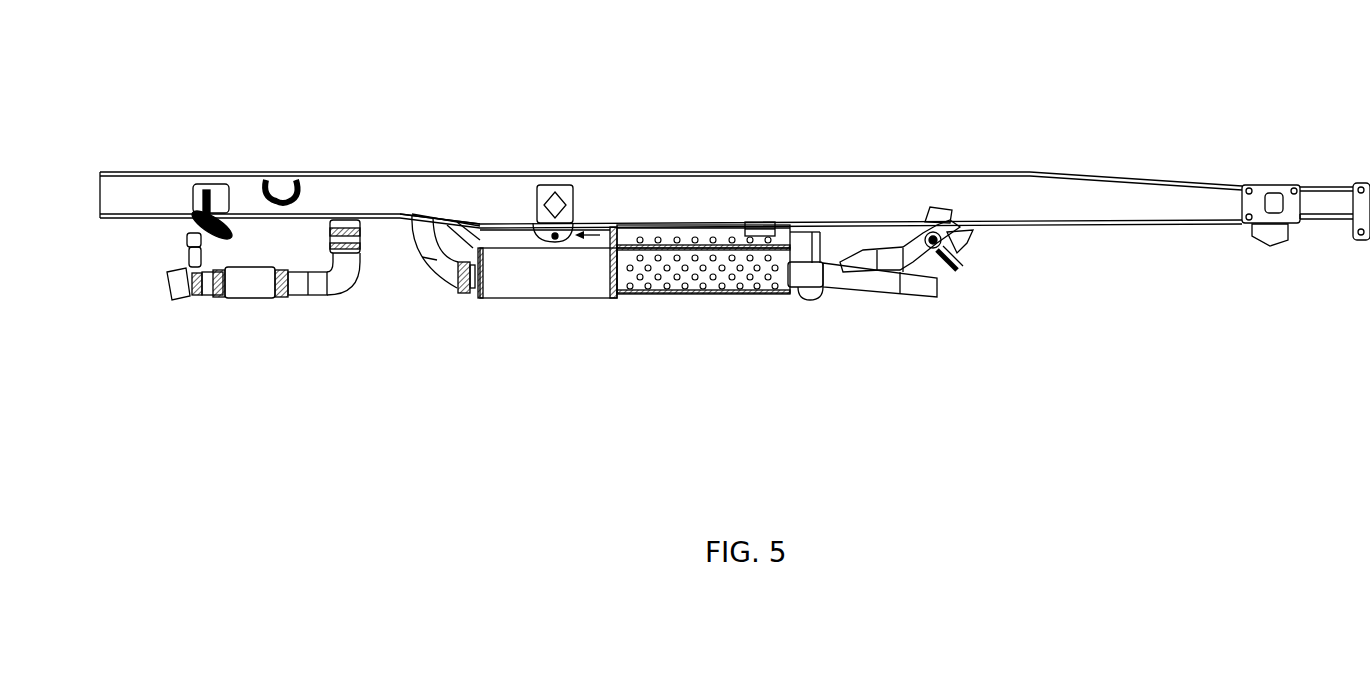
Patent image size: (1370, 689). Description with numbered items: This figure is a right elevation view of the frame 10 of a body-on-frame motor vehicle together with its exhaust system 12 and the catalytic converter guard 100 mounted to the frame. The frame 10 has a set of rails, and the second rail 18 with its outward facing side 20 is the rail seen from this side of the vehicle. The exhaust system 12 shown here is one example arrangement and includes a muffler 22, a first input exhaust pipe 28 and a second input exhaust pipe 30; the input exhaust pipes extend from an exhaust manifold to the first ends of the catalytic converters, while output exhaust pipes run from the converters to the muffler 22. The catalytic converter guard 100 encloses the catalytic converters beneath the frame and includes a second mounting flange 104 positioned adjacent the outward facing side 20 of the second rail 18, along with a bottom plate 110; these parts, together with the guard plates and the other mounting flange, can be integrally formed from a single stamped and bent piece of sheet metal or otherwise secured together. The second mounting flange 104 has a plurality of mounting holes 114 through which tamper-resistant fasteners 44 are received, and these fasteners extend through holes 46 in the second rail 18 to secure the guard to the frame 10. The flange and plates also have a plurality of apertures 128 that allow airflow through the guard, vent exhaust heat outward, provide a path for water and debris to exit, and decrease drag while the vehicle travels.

The frame 10 is at (284, 97).
The exhaust system 12 is at (424, 308).
The second rail 18 is at (312, 172).
The outward facing side 20 is at (406, 172).
The muffler 22 is at (532, 290).
The first input exhaust pipe 28 is at (825, 293).
The second input exhaust pipe 30 is at (930, 292).
The tamper-resistant fasteners 44 is at (780, 222).
The holes 46 is at (622, 220).
The catalytic converter guard 100 is at (692, 343).
The second mounting flange 104 is at (712, 292).
The bottom plate 110 is at (677, 295).
The mounting holes 114 is at (710, 222).
The apertures 128 is at (641, 280).